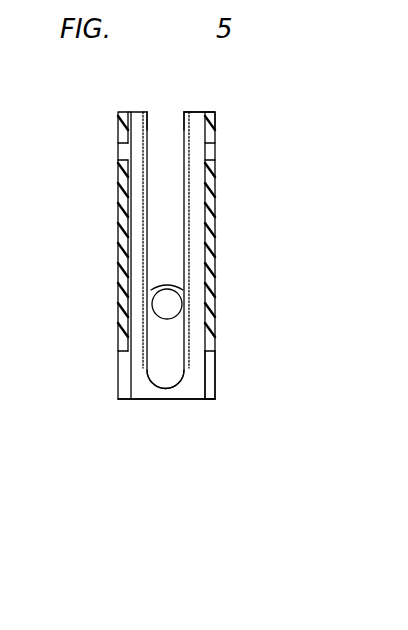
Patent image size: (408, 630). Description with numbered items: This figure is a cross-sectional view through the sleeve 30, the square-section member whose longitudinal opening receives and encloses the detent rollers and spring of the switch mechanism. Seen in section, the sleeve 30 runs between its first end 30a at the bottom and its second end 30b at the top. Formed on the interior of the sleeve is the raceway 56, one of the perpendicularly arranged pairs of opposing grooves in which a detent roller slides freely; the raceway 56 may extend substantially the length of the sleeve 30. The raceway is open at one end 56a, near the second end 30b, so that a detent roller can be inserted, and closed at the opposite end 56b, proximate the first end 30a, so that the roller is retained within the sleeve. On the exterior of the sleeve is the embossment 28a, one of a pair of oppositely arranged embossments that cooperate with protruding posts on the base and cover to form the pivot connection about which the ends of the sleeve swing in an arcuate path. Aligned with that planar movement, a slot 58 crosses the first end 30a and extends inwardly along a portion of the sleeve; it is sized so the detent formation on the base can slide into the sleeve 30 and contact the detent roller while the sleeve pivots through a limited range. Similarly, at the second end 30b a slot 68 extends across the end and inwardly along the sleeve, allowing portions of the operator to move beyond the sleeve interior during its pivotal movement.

The sleeve 30 is at (215, 250).
The first end of the sleeve 30a is at (209, 400).
The second end of the sleeve 30b is at (205, 112).
The raceway 56 is at (149, 218).
The open end of the raceway 56a is at (159, 113).
The closed end of the raceway 56b is at (168, 387).
The embossment 28a is at (154, 300).
The slot 58 is at (223, 352).
The slot 68 is at (177, 90).